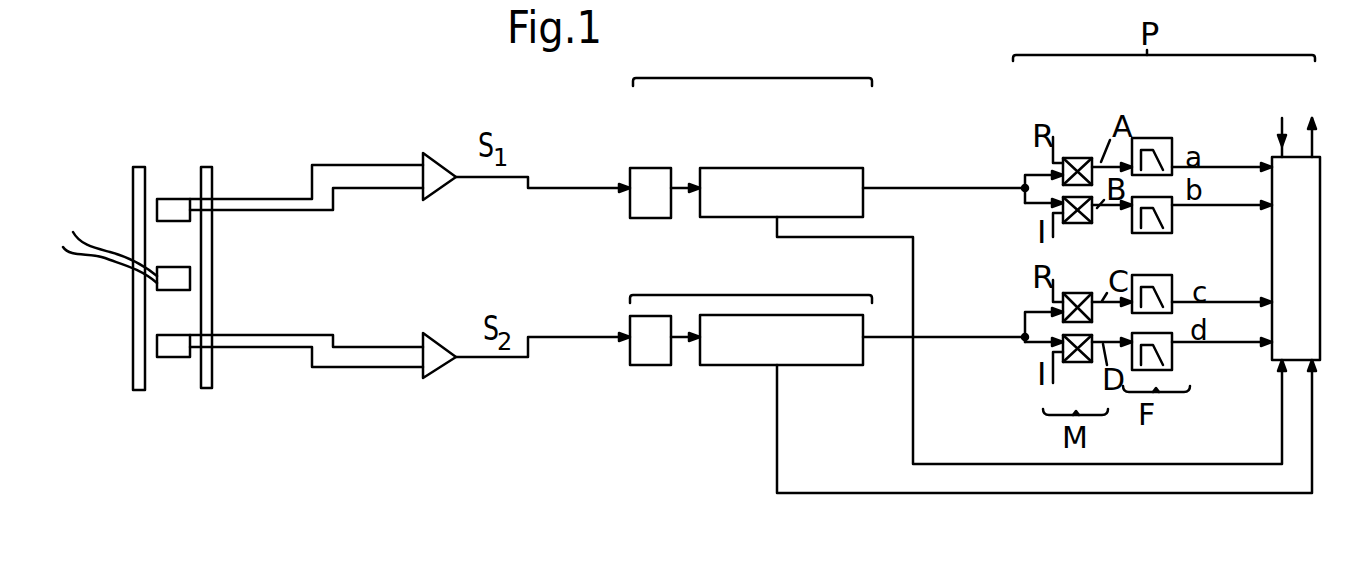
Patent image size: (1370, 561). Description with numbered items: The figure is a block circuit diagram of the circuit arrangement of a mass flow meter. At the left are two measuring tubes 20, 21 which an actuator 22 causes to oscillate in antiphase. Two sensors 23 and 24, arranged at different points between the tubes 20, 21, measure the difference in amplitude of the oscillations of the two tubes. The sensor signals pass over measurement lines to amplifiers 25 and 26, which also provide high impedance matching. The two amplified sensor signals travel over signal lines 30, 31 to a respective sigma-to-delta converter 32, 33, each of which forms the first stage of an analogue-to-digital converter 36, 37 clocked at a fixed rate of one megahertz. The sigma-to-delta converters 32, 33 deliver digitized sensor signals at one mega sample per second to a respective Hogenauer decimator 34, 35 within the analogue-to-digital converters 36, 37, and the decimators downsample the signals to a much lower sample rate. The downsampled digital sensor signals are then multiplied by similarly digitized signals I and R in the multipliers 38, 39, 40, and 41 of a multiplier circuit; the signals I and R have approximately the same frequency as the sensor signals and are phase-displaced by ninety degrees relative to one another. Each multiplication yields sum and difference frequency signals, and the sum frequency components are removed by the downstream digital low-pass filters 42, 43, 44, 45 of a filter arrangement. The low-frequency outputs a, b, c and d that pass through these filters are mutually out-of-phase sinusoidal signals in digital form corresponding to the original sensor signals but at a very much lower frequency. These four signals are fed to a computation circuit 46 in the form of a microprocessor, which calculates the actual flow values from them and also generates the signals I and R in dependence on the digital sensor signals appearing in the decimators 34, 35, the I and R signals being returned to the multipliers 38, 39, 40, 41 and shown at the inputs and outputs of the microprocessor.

The measuring tube 20 is at (213, 182).
The measuring tube 21 is at (132, 187).
The actuator 22 is at (187, 267).
The sensor 23 is at (178, 358).
The sensor 24 is at (172, 198).
The amplifier 25 is at (438, 155).
The amplifier 26 is at (440, 377).
The signal line 30 is at (547, 188).
The signal line 31 is at (552, 340).
The sigma-to-delta converter 32 is at (650, 167).
The sigma-to-delta converter 33 is at (655, 365).
The Hogenauer decimator 34 is at (742, 167).
The Hogenauer decimator 35 is at (752, 365).
The analogue-to-digital converter 36 is at (752, 60).
The analogue-to-digital converter 37 is at (751, 278).
The multiplier 38 is at (1075, 158).
The multiplier 39 is at (1075, 293).
The multiplier 40 is at (1092, 222).
The multiplier 41 is at (1077, 363).
The digital low-pass filter 42 is at (1147, 138).
The digital low-pass filter 43 is at (1173, 363).
The digital low-pass filter 44 is at (1172, 228).
The digital low-pass filter 45 is at (1172, 292).
The computation circuit 46 is at (1322, 218).